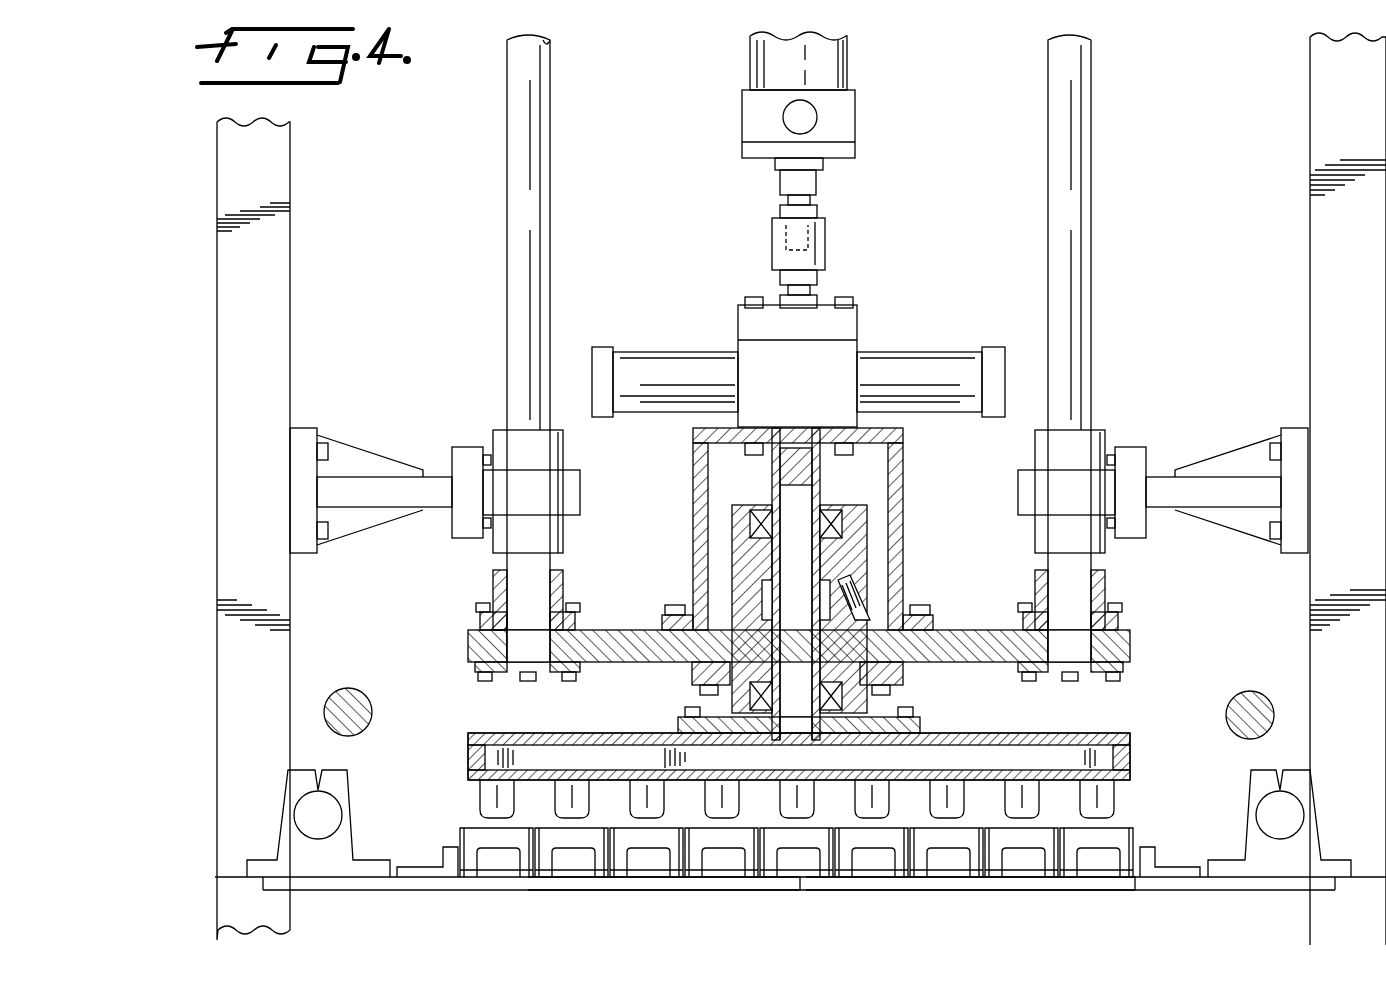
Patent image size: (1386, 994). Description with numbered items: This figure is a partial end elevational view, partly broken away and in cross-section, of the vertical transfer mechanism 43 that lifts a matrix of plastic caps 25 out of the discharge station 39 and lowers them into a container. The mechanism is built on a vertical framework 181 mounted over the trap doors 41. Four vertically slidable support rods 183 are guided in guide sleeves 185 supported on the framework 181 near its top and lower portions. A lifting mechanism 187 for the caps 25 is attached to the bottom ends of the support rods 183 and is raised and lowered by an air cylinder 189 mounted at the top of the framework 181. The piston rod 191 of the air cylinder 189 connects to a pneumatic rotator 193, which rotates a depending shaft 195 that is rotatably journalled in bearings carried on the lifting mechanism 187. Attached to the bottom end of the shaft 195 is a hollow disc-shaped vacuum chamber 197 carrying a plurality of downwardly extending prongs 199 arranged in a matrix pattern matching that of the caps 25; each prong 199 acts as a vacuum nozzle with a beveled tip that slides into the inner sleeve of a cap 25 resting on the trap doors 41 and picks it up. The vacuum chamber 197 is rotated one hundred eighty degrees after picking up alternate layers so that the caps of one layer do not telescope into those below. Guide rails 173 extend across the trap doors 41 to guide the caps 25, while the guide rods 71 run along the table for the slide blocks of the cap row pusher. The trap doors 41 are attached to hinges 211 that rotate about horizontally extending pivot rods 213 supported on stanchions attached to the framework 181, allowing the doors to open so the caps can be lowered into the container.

The plastic caps 25 is at (552, 882).
The discharge station 39 is at (1116, 728).
The trap doors 41 is at (652, 891).
The vertical transfer mechanism 43 is at (896, 282).
The guide rods 71 is at (360, 703).
The guide rails 173 is at (440, 870).
The vertical framework 181 is at (278, 255).
The support rods 183 is at (548, 196).
The guide sleeves 185 is at (506, 430).
The lifting mechanism 187 is at (916, 676).
The air cylinder 189 is at (825, 63).
The piston rod 191 is at (790, 198).
The pneumatic rotator 193 is at (850, 356).
The shaft 195 is at (822, 482).
The vacuum chamber 197 is at (1108, 764).
The prongs 199 is at (478, 797).
The hinges 211 is at (318, 873).
The pivot rods 213 is at (330, 806).